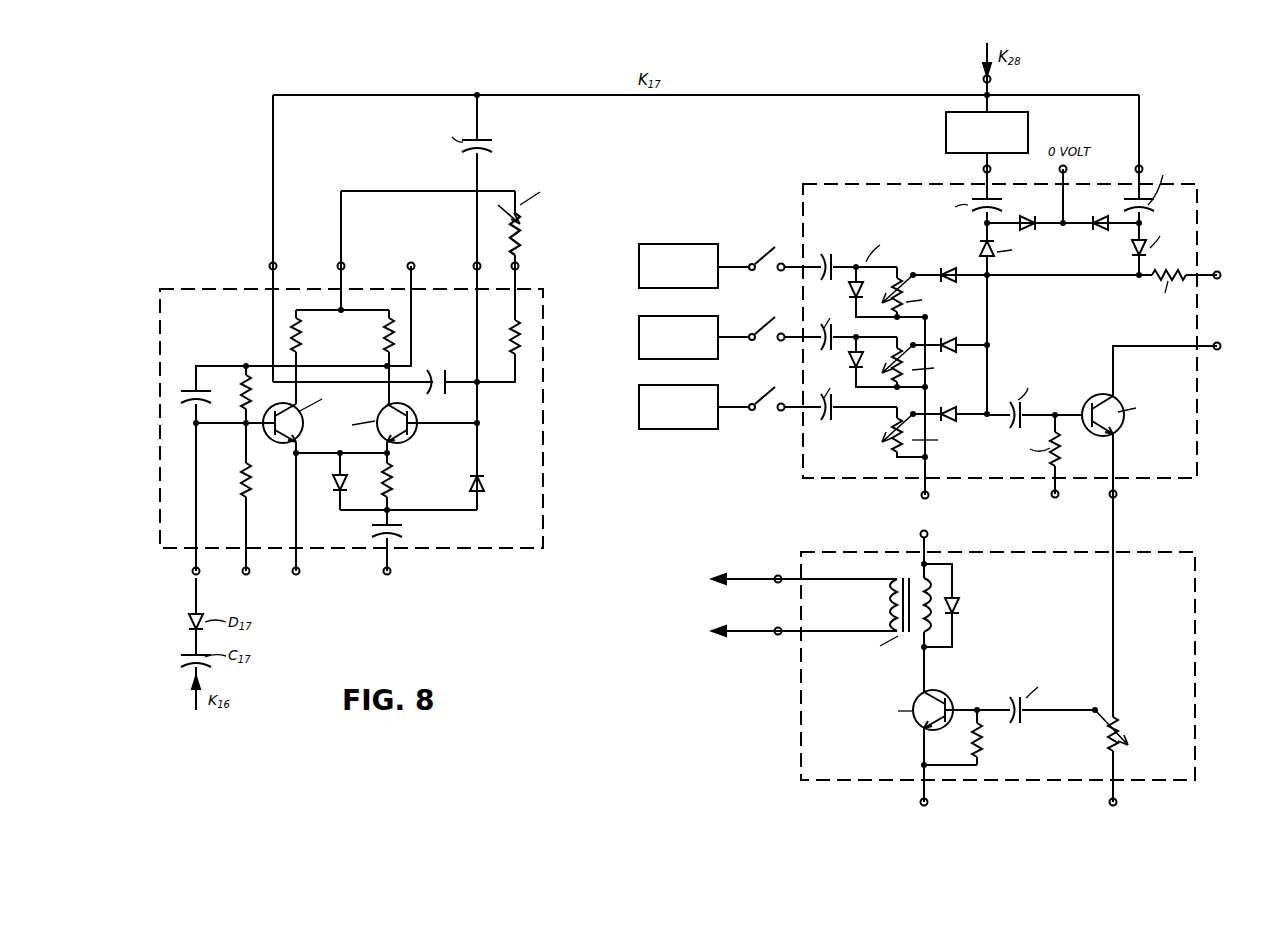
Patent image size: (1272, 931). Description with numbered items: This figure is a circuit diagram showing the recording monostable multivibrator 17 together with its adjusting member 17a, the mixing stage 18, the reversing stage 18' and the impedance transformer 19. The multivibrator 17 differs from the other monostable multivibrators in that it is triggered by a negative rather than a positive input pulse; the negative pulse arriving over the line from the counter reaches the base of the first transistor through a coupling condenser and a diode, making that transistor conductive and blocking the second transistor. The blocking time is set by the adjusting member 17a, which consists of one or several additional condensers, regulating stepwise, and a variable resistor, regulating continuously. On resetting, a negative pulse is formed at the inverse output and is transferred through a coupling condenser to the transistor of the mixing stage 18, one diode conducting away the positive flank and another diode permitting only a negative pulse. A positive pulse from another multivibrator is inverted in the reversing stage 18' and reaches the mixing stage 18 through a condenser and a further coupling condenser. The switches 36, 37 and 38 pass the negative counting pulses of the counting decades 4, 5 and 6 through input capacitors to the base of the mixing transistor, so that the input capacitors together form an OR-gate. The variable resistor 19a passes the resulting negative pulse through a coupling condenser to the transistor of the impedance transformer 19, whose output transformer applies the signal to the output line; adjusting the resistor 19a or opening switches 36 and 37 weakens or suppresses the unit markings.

The counting decade 4 is at (648, 403).
The counting decade 5 is at (648, 333).
The counting decade 6 is at (648, 260).
The recording monostable multivibrator 17 is at (518, 487).
The adjusting member 17a is at (487, 138).
The mixing stage 18 is at (1018, 331).
The reversing stage 18' is at (1005, 128).
The impedance transformer 19 is at (968, 653).
The variable resistor 19a is at (1120, 718).
The switch 36 is at (775, 387).
The switch 37 is at (775, 317).
The switch 38 is at (775, 247).